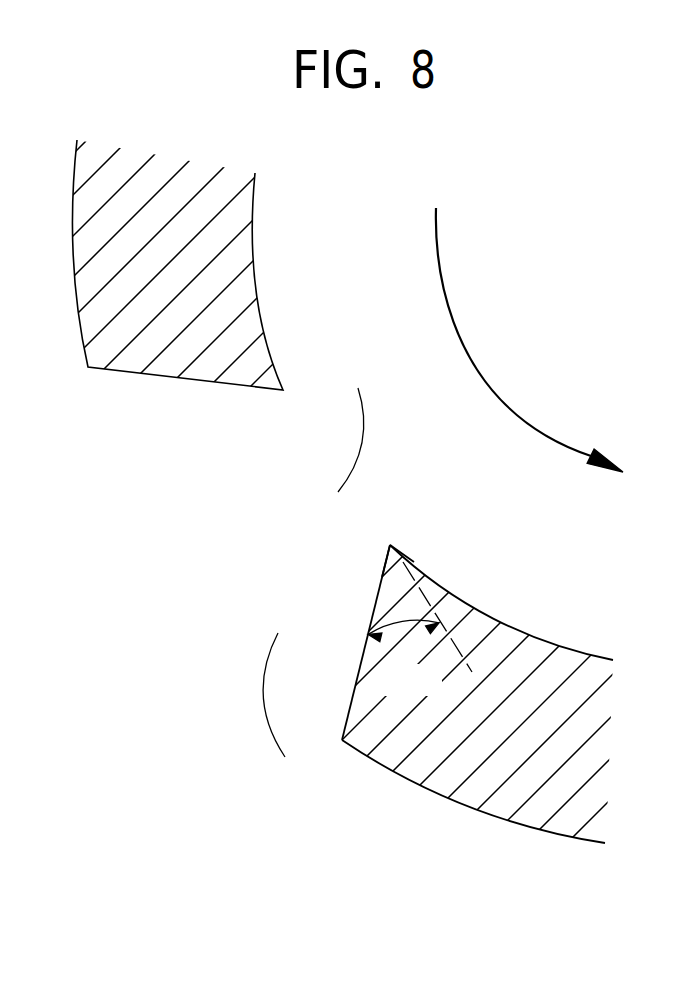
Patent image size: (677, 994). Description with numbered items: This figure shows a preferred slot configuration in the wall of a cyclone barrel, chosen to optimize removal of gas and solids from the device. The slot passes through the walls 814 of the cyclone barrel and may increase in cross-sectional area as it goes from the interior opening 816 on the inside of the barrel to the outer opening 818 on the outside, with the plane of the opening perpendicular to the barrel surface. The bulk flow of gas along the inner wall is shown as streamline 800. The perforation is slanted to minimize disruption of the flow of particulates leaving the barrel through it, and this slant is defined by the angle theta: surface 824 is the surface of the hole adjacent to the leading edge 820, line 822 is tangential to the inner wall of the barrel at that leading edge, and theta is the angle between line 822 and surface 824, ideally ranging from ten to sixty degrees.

The streamline 800 is at (448, 302).
The walls of the cyclone barrel 814 is at (490, 612).
The interior opening 816 is at (359, 424).
The outer opening 818 is at (295, 717).
The leading edge 820 is at (390, 544).
The line tangential to the inner wall of the barrel 822 is at (430, 594).
The surface of the hole adjacent to the leading edge 824 is at (376, 602).